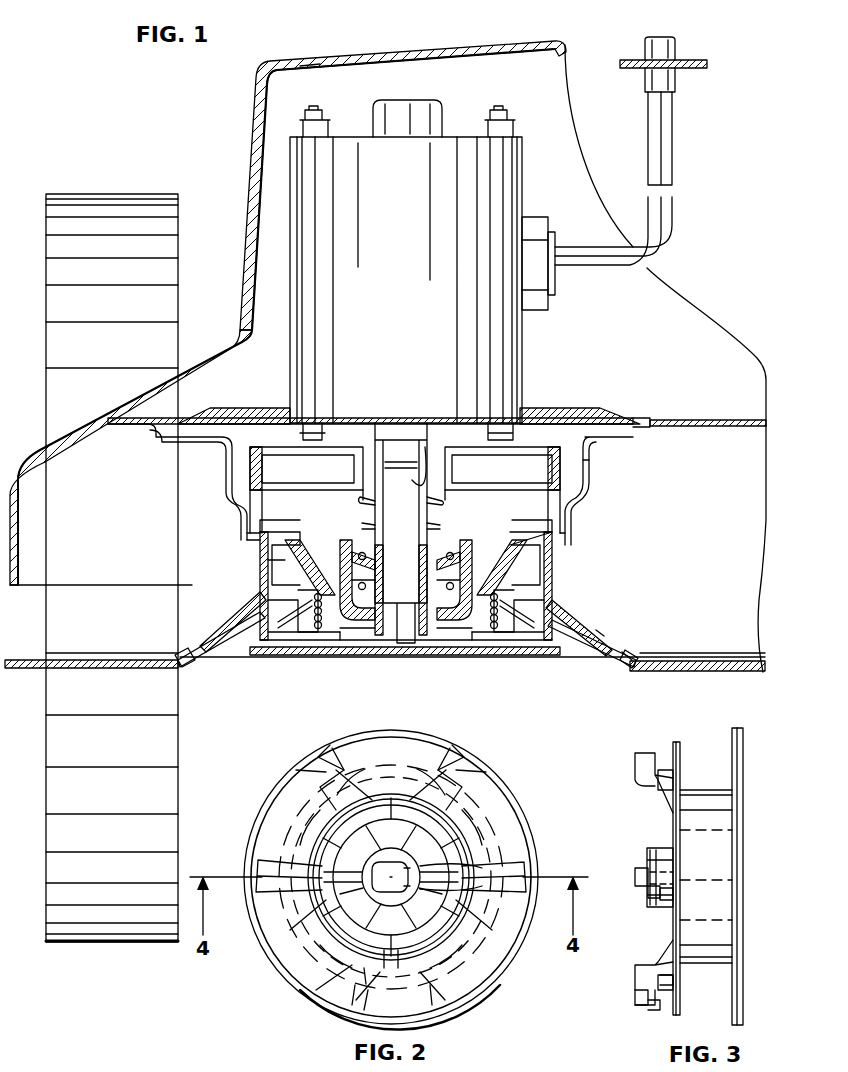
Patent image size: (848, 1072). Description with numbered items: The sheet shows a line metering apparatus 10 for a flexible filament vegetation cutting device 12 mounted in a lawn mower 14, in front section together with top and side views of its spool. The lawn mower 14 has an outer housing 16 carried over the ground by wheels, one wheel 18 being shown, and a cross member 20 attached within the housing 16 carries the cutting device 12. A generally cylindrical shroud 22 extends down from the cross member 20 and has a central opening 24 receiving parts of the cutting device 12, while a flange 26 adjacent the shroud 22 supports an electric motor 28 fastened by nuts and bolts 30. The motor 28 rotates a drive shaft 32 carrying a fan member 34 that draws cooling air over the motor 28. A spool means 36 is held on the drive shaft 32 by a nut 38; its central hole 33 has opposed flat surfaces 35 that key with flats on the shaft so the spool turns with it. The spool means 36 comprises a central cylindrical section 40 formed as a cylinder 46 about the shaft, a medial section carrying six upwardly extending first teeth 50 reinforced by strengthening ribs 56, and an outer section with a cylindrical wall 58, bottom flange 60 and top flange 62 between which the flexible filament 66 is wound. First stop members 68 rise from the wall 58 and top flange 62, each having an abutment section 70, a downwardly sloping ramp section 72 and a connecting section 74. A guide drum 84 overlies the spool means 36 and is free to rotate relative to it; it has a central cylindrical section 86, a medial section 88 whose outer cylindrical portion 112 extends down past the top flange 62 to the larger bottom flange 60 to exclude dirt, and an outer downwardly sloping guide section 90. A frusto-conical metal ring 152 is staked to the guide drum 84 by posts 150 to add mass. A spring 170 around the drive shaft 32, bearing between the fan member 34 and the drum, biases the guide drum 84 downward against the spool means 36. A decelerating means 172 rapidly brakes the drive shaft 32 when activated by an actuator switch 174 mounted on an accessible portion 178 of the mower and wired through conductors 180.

In FIG. 1, the line metering apparatus 10 is at (588, 533).
In FIG. 1, the flexible filament vegetation cutting device 12 is at (204, 478).
In FIG. 1, the lawn mower 14 is at (243, 138).
In FIG. 1, the outer housing 16 is at (326, 60).
In FIG. 1, the wheel 18 is at (116, 194).
In FIG. 1, the cross member 20 is at (710, 420).
In FIG. 1, the shroud 22 is at (584, 472).
In FIG. 1, the central opening 24 is at (252, 540).
In FIG. 1, the flange 26 is at (203, 416).
In FIG. 1, the electric motor 28 is at (465, 142).
In FIG. 1, the nuts and bolts 30 is at (306, 122).
In FIG. 1, the drive shaft 32 is at (430, 486).
In FIG. 2, the hole 33 is at (384, 880).
In FIG. 1, the fan member 34 is at (292, 486).
In FIG. 2, the flat surfaces 35 is at (470, 869).
In FIG. 1, the spool means 36 is at (357, 652).
In FIG. 1, the nut 38 is at (404, 650).
In FIG. 3, the central cylindrical section 40 is at (642, 853).
In FIG. 3, the cylinder 46 is at (648, 848).
In FIG. 2, the first teeth 50 is at (392, 985).
In FIG. 2, the strengthening ribs 56 is at (391, 877).
In FIG. 1, the cylindrical wall 58 is at (478, 655).
In FIG. 3, the cylindrical wall 58 is at (694, 866).
In FIG. 1, the bottom flange 60 is at (286, 650).
In FIG. 2, the bottom flange 60 is at (488, 988).
In FIG. 3, the bottom flange 60 is at (736, 736).
In FIG. 1, the top flange 62 is at (550, 604).
In FIG. 2, the top flange 62 is at (508, 810).
In FIG. 3, the top flange 62 is at (681, 742).
In FIG. 1, the flexible filament 66 is at (192, 668).
In FIG. 1, the first stop members 68 is at (545, 554).
In FIG. 2, the first stop members 68 is at (320, 757).
In FIG. 3, the first stop members 68 is at (637, 769).
In FIG. 2, the abutment section 70 is at (320, 772).
In FIG. 3, the abutment section 70 is at (636, 882).
In FIG. 2, the ramp section 72 is at (336, 752).
In FIG. 3, the ramp section 72 is at (652, 893).
In FIG. 2, the connecting section 74 is at (376, 972).
In FIG. 3, the connecting section 74 is at (663, 902).
In FIG. 1, the guide drum 84 is at (630, 608).
In FIG. 1, the central cylindrical section 86 is at (365, 549).
In FIG. 1, the medial section 88 is at (527, 536).
In FIG. 1, the guide section 90 is at (642, 648).
In FIG. 1, the outer cylindrical portion 112 is at (272, 572).
In FIG. 1, the posts 150 is at (250, 618).
In FIG. 1, the ring 152 is at (198, 636).
In FIG. 1, the spring 170 is at (442, 517).
In FIG. 1, the decelerating means 172 is at (535, 216).
In FIG. 1, the actuator switch 174 is at (680, 52).
In FIG. 1, the accessible portion 178 is at (708, 65).
In FIG. 1, the conductors 180 is at (673, 148).